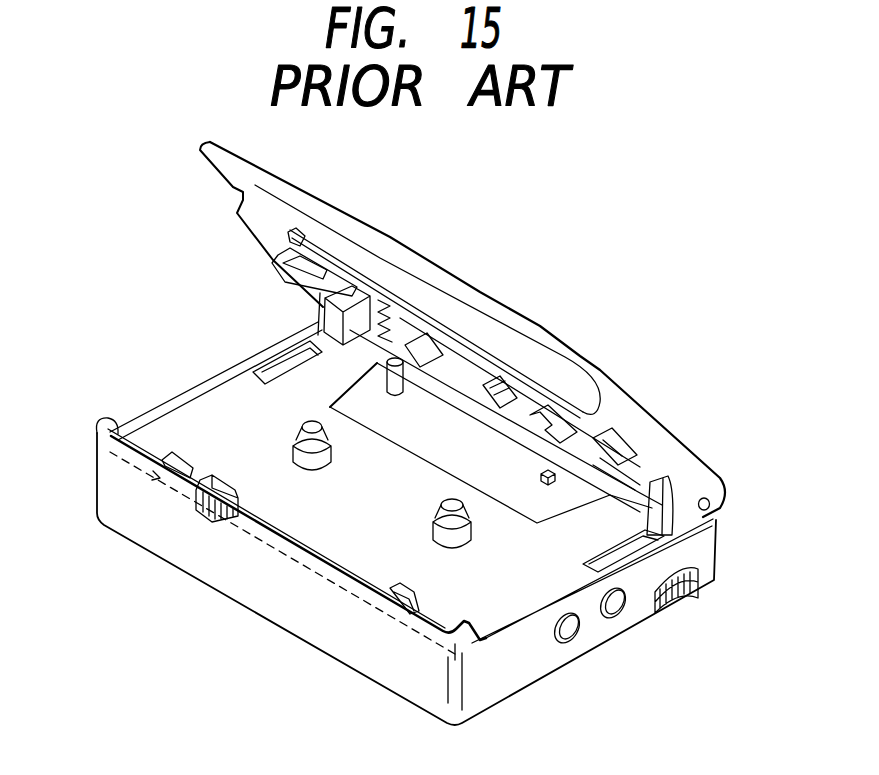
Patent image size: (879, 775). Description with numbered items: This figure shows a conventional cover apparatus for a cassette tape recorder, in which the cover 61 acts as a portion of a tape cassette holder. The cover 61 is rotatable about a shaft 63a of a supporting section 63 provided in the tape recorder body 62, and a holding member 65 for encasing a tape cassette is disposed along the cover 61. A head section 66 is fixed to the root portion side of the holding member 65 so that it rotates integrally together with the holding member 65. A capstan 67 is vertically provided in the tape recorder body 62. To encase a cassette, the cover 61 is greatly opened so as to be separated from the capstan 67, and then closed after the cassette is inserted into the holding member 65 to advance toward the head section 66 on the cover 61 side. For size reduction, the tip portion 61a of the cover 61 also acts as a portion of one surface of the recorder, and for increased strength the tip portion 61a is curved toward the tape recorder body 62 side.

The cover 61 is at (628, 417).
The tip portion 61a is at (413, 263).
The tape recorder body 62 is at (257, 590).
The supporting section 63 is at (337, 317).
The shaft 63a is at (722, 484).
The holding member 65 is at (272, 263).
The head section 66 is at (493, 397).
The capstan 67 is at (388, 378).